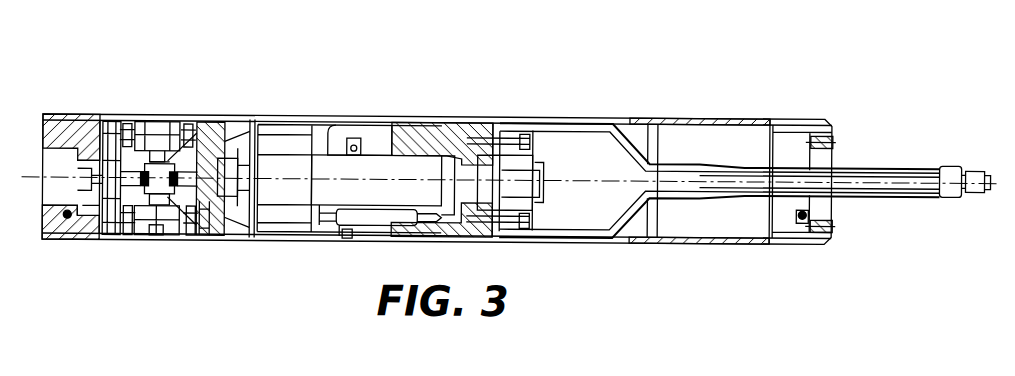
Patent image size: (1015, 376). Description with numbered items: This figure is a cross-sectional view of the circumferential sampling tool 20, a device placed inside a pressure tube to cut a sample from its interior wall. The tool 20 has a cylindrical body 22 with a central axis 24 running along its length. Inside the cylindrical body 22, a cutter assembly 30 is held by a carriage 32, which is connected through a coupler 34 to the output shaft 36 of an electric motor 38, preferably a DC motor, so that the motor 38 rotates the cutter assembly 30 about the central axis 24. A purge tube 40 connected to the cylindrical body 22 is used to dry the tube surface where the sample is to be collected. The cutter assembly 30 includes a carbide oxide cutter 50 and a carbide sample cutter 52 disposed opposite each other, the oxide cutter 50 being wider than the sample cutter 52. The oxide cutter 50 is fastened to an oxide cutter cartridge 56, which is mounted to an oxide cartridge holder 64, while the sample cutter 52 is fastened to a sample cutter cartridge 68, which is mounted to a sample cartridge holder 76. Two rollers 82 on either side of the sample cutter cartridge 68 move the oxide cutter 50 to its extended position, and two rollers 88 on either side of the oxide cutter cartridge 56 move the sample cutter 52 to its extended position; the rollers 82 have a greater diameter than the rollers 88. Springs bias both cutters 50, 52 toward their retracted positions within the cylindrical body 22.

The circumferential sampling tool 20 is at (730, 100).
The cylindrical body 22 is at (411, 114).
The central axis 24 is at (860, 181).
The cutter assembly 30 is at (176, 53).
The carriage 32 is at (228, 239).
The coupler 34 is at (230, 113).
The output shaft 36 is at (248, 113).
The electric motor 38 is at (348, 114).
The purge tube 40 is at (514, 114).
The oxide cutter 50 is at (152, 113).
The sample cutter 52 is at (157, 239).
The oxide cutter cartridge 56 is at (140, 113).
The oxide cartridge holder 64 is at (200, 113).
The sample cutter cartridge 68 is at (137, 239).
The sample cartridge holder 76 is at (206, 239).
The rollers 82 is at (132, 238).
The rollers 88 is at (122, 113).